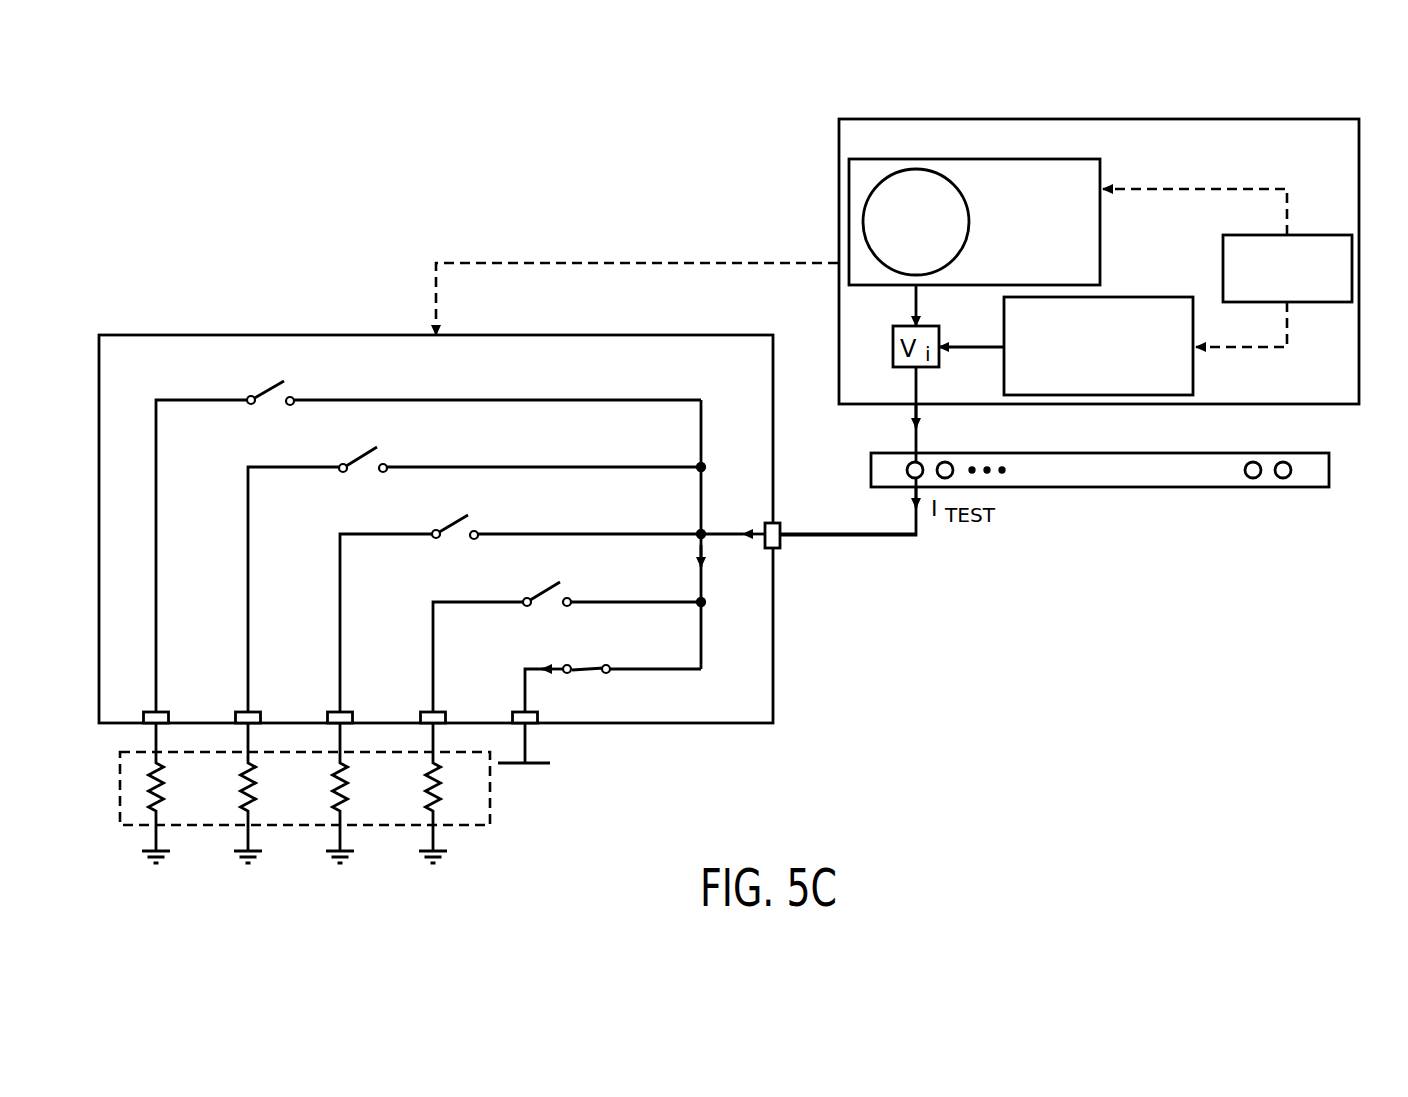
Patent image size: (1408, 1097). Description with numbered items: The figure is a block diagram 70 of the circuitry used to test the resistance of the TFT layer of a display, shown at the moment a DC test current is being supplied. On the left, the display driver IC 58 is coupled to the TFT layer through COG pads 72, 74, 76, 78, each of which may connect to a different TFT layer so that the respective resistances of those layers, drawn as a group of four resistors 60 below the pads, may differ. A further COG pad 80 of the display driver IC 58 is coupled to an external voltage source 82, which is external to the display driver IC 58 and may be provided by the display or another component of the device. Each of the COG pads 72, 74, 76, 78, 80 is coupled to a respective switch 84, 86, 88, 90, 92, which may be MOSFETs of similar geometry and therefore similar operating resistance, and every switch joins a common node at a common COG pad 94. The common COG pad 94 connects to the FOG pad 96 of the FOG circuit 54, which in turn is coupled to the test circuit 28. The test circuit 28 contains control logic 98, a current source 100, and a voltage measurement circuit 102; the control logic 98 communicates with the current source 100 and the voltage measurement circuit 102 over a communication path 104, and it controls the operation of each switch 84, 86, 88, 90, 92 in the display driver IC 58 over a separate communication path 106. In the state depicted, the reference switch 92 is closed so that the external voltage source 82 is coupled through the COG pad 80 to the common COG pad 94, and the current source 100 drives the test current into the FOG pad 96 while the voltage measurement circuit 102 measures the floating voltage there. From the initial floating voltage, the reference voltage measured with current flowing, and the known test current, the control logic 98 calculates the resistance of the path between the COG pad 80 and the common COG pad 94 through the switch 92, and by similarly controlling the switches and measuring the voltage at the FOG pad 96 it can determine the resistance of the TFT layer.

The block diagram 70 is at (160, 241).
The test circuit 28 is at (1100, 119).
The current source 100 is at (973, 159).
The voltage measurement circuit 102 is at (1147, 297).
The control logic 98 is at (1255, 235).
The communication path 104 is at (1110, 189).
The communication path 106 is at (638, 263).
The FOG circuit 54 is at (1329, 470).
The FOG pad 96 is at (911, 462).
The display driver IC 58 is at (99, 530).
The common COG pad 94 is at (781, 530).
The switch 84 is at (298, 385).
The switch 86 is at (393, 453).
The switch 88 is at (483, 522).
The switch 90 is at (577, 587).
The reference switch 92 is at (615, 653).
The COG pad 72 is at (143, 713).
The COG pad 74 is at (235, 713).
The COG pad 76 is at (328, 713).
The COG pad 78 is at (420, 713).
The COG pad 80 is at (512, 713).
The external voltage source 82 is at (612, 757).
The load resistors R1-R4 60 is at (120, 785).